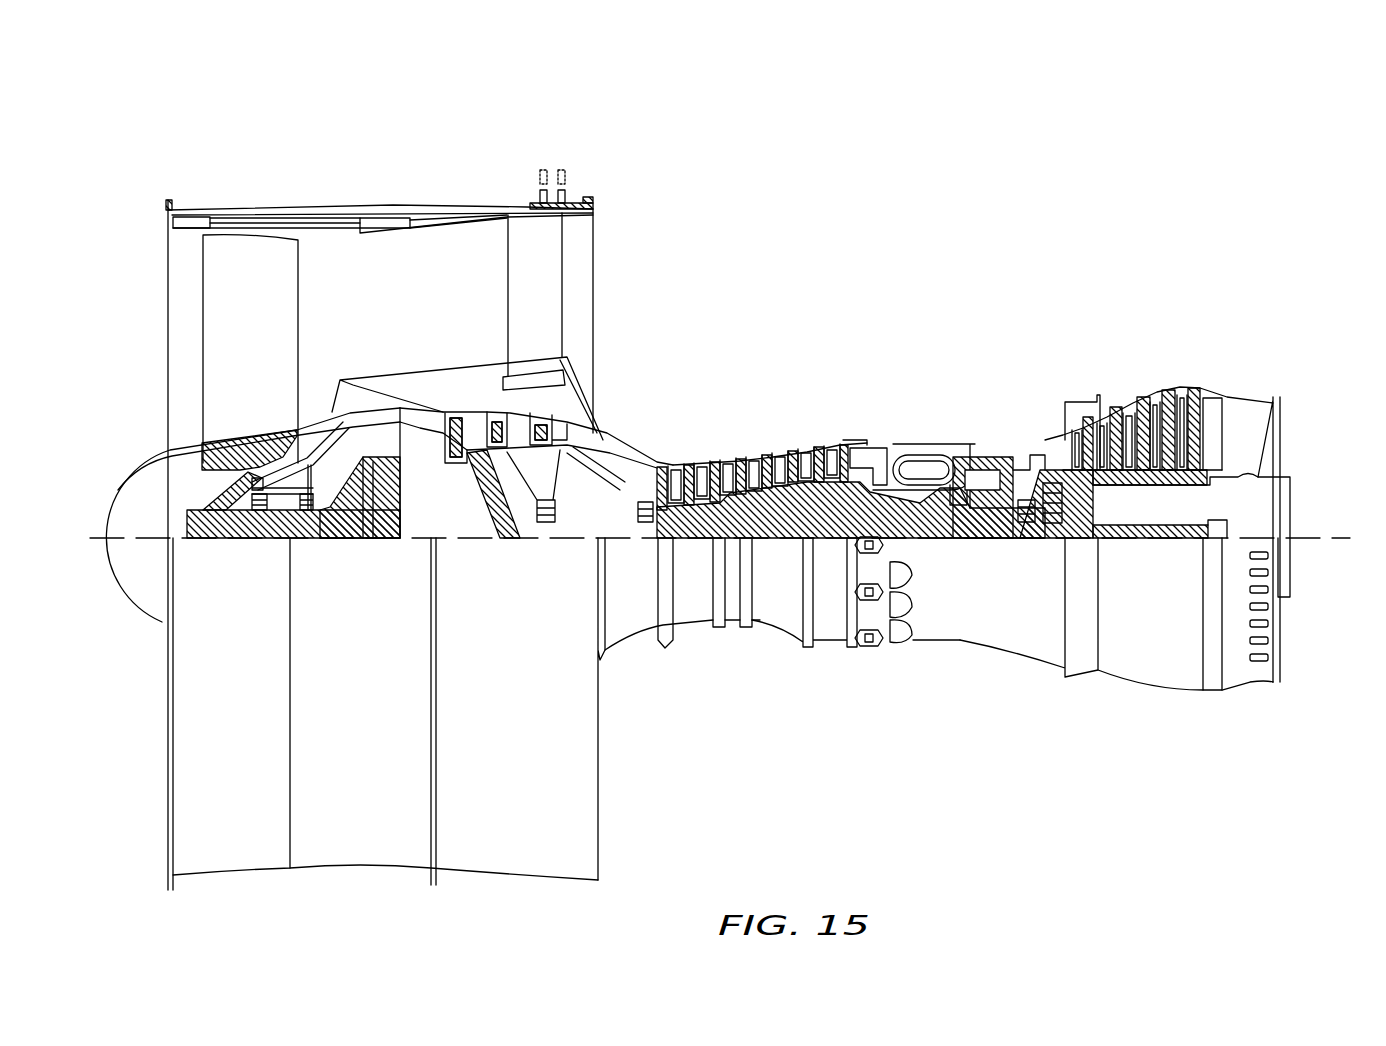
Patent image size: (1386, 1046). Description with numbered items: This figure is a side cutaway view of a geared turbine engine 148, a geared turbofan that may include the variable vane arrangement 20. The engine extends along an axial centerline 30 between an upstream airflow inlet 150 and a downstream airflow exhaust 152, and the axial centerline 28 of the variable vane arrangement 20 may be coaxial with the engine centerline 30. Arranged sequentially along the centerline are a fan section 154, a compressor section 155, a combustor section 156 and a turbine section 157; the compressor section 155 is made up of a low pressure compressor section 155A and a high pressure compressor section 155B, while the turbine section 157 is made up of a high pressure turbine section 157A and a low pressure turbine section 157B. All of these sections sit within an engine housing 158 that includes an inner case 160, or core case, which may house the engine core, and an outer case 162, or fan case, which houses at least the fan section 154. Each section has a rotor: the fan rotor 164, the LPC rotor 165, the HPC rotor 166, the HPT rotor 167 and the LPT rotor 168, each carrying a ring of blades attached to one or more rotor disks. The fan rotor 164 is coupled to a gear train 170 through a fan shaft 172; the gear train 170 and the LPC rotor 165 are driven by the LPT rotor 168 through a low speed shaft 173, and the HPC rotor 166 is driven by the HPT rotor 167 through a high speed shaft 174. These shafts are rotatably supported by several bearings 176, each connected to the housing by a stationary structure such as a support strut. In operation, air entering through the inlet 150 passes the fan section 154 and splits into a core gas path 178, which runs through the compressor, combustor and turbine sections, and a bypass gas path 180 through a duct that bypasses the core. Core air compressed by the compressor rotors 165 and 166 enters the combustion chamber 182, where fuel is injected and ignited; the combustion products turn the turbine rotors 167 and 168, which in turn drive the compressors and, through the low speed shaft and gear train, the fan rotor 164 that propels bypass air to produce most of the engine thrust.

The geared turbine engine 148 is at (135, 188).
The upstream airflow inlet 150 is at (168, 288).
The downstream airflow exhaust 152 is at (1280, 437).
The fan section 154 is at (345, 190).
The compressor section 155 is at (828, 117).
The low pressure compressor section 155A is at (598, 167).
The high pressure compressor section 155B is at (828, 367).
The combustor section 156 is at (960, 367).
The turbine section 157 is at (1238, 297).
The high pressure turbine section 157A is at (1045, 367).
The low pressure turbine section 157B is at (1238, 367).
The engine housing 158 is at (623, 668).
The inner case 160 is at (833, 648).
The outer case 162 is at (558, 882).
The fan rotor 164 is at (172, 452).
The LPC rotor 165 is at (488, 483).
The HPC rotor 166 is at (780, 505).
The HPT rotor 167 is at (990, 515).
The LPT rotor 168 is at (1140, 485).
The gear train 170 is at (385, 540).
The fan shaft 172 is at (238, 540).
The low speed shaft 173 is at (1158, 538).
The high speed shaft 174 is at (932, 540).
The bearings 176 is at (272, 540).
The core gas path 178 is at (620, 458).
The bypass gas path 180 is at (432, 312).
The combustion chamber 182 is at (912, 468).
The variable vane arrangement 20 is at (440, 408).
The axial centerline of the variable vane arrangement 28 is at (734, 587).
The axial centerline of the turbine engine 30 is at (1350, 545).